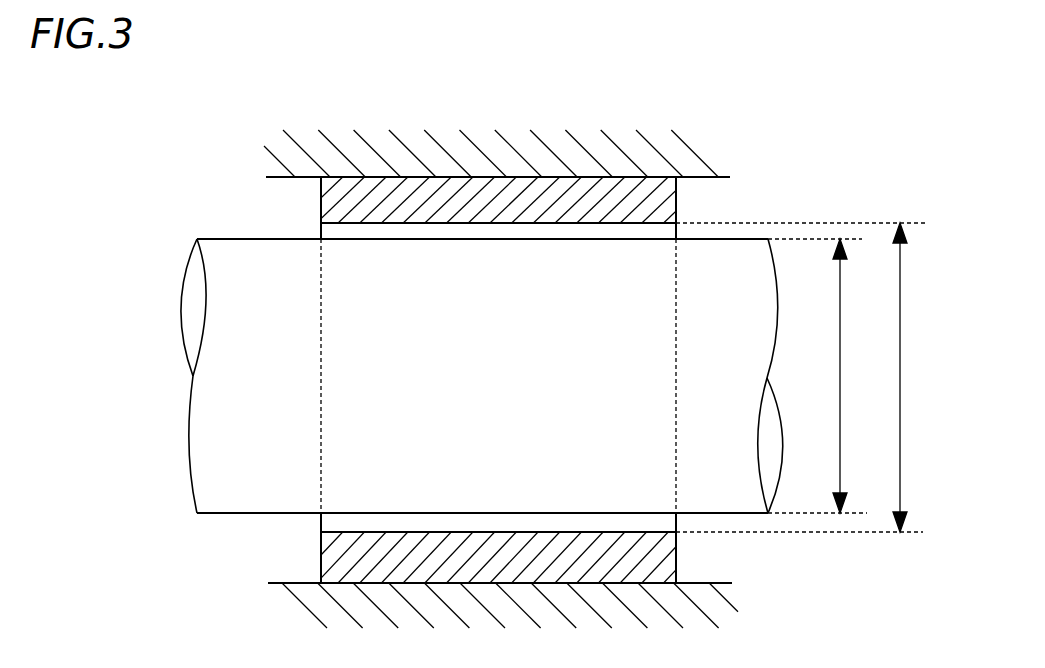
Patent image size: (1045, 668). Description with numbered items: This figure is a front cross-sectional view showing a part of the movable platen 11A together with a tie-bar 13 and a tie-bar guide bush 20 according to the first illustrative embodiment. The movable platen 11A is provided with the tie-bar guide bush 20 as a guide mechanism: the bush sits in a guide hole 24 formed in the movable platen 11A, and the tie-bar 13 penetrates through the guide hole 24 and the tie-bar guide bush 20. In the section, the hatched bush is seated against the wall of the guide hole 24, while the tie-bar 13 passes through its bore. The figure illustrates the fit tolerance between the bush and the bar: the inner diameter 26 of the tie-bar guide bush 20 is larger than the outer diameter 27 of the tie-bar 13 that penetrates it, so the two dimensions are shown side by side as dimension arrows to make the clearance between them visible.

The movable platen 11A is at (318, 148).
The tie-bar guide bush 20 is at (571, 188).
The guide hole 24 is at (703, 178).
The tie-bar 13 is at (237, 401).
The outer diameter 27 is at (817, 376).
The inner diameter 26 is at (813, 377).